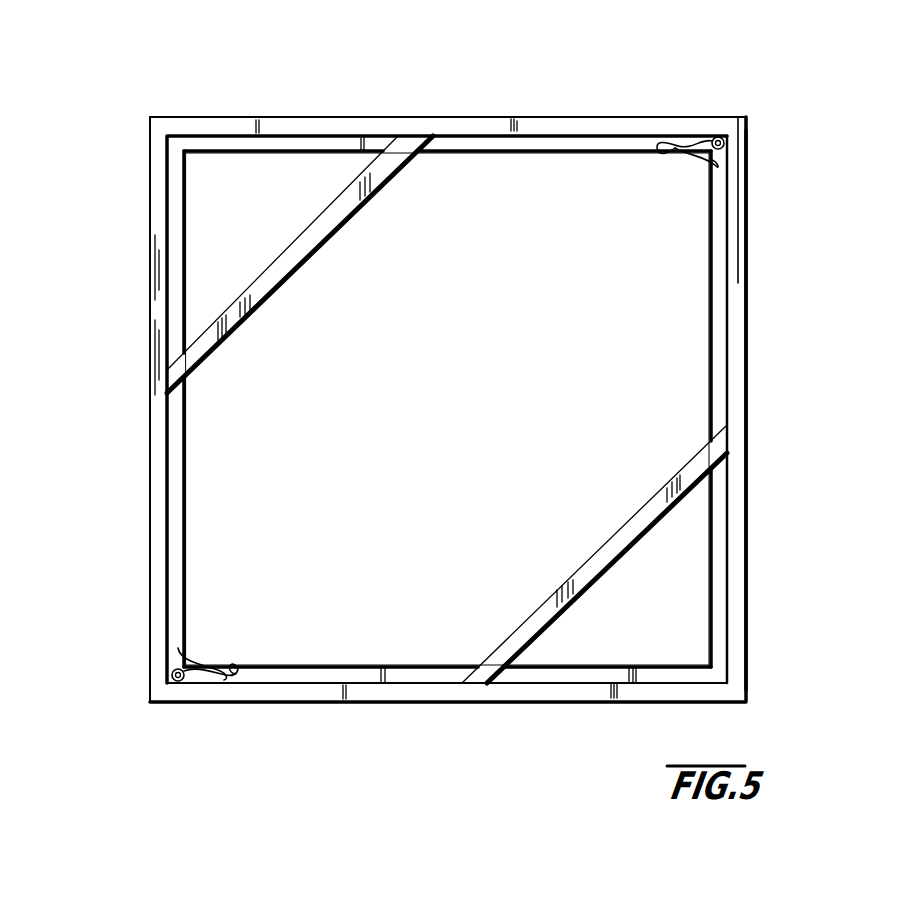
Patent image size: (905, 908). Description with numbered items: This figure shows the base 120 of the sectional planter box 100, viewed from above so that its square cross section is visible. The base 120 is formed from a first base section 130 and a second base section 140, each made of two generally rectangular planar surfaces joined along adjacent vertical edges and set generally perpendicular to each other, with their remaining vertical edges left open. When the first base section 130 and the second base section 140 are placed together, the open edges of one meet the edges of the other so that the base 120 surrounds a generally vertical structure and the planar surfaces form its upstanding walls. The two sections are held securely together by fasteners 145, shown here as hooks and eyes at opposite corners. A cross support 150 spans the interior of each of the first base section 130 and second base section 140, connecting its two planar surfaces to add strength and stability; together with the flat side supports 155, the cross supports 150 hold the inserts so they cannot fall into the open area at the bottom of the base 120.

The sectional planter box 100 is at (190, 92).
The base 120 is at (165, 117).
The first base section 130 is at (158, 193).
The second base section 140 is at (733, 657).
The fastener 145 is at (683, 157).
The cross support 150 is at (326, 232).
The flat side support 155 is at (482, 143).